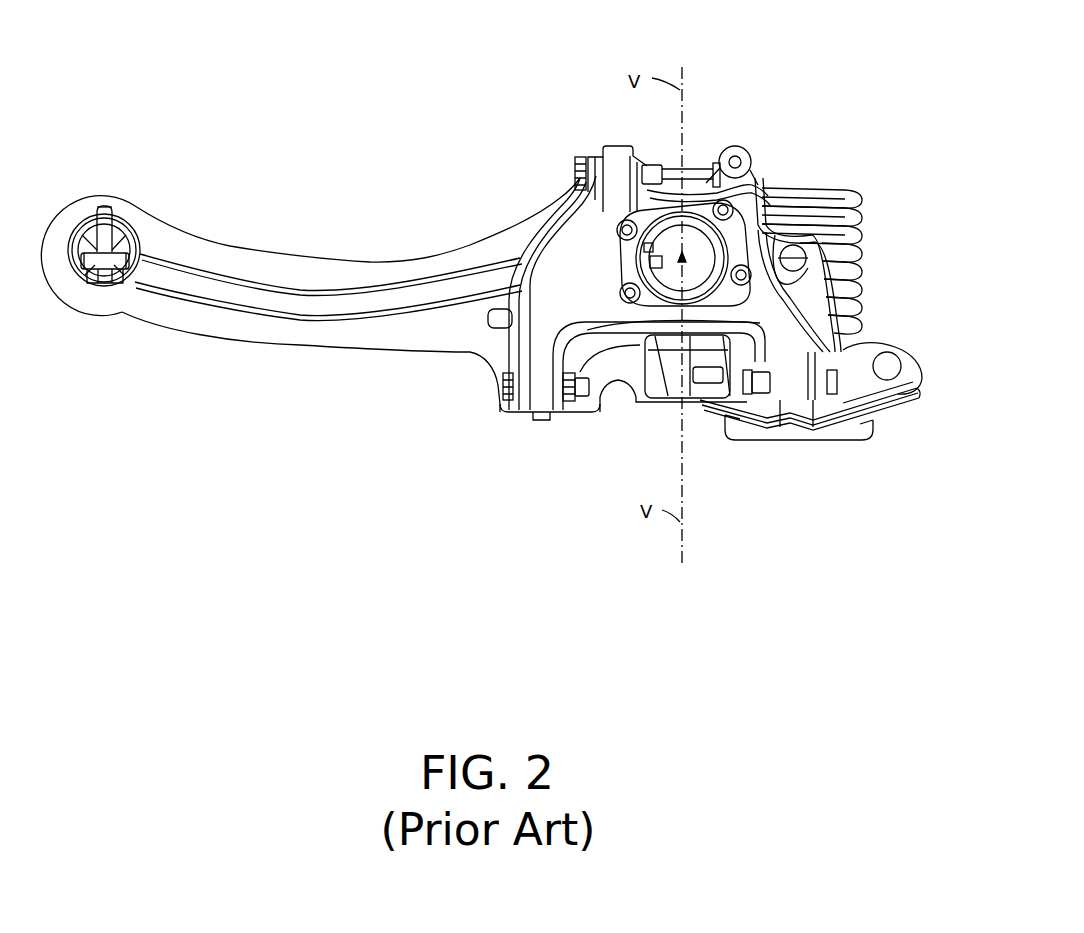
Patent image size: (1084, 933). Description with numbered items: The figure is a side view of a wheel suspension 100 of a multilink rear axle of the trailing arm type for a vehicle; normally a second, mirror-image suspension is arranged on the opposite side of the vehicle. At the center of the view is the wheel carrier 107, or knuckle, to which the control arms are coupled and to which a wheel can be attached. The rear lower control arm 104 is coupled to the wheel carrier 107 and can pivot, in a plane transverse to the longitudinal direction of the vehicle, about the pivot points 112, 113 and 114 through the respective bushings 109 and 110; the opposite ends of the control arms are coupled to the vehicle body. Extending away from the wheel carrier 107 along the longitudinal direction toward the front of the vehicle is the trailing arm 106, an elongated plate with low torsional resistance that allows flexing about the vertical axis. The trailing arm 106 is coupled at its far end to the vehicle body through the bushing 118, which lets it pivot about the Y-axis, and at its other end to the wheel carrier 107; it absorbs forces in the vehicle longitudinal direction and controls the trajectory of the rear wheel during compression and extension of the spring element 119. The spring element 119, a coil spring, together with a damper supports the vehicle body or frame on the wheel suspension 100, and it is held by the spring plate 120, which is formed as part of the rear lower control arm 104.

The wheel suspension 100 is at (846, 96).
The lower control arm 104 is at (886, 360).
The trailing arm 106 is at (273, 327).
The wheel carrier 107 is at (560, 370).
The bushing 109 is at (559, 418).
The bushing 110 is at (800, 412).
The pivot point 112 is at (502, 385).
The pivot point 113 is at (867, 407).
The pivot point 114 is at (575, 178).
The bushing 118 is at (118, 238).
The spring element 119 is at (850, 228).
The spring plate 120 is at (912, 376).